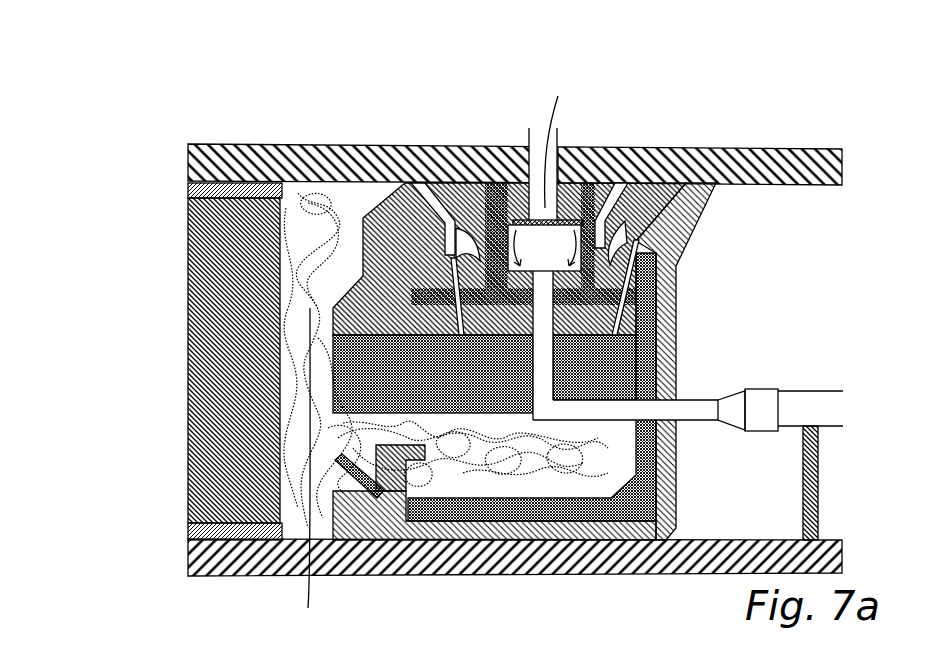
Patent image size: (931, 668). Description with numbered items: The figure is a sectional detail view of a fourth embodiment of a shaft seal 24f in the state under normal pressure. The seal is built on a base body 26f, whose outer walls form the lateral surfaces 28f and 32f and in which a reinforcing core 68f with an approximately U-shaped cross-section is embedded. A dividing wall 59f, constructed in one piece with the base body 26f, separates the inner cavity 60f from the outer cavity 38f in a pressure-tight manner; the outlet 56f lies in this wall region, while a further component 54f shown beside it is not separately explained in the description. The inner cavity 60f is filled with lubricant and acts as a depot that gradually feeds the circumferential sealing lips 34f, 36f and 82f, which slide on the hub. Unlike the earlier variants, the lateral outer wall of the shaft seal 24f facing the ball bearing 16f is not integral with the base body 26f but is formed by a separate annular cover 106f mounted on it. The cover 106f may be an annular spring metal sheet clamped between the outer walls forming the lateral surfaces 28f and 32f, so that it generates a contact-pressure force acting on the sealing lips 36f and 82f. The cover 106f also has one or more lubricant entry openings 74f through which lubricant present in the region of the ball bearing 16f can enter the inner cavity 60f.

The ball bearing 16f is at (158, 368).
The shaft seal 24f is at (705, 287).
The base body 26f is at (666, 345).
The lateral surface of the base body 28f is at (512, 531).
The lateral surface of the base body 32f is at (500, 175).
The circumferential sealing lip 34f is at (610, 176).
The circumferential sealing lip 36f is at (448, 176).
The outer cavity 38f is at (553, 243).
The discharge line 54f is at (671, 411).
The outlet 56f is at (565, 138).
The dividing wall 59f is at (670, 320).
The inner cavity 60f is at (666, 468).
The reinforcing core 68f is at (633, 532).
The lubricant entry opening 74f is at (291, 474).
The circumferential sealing lip 82f is at (382, 175).
The annular cover 106f is at (325, 303).